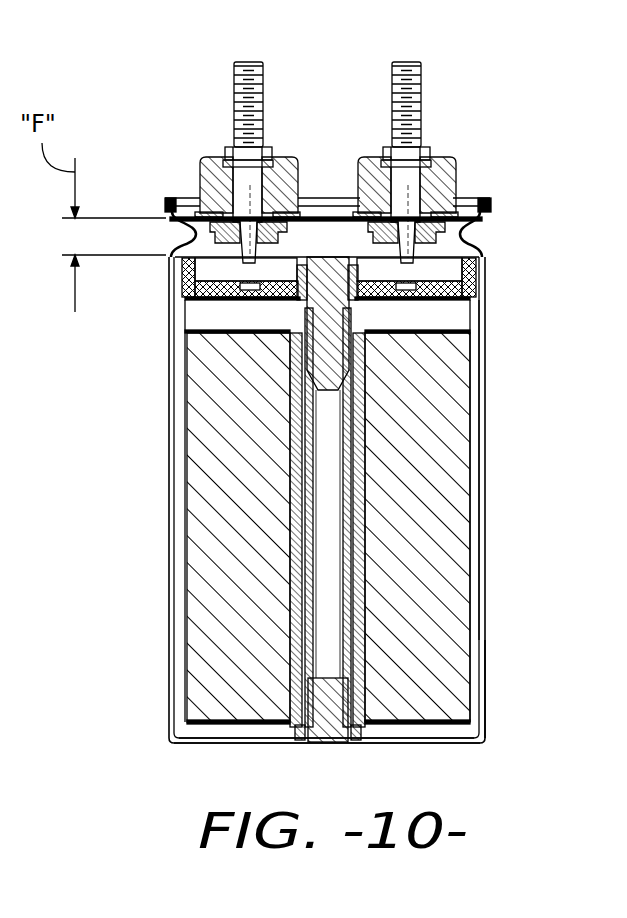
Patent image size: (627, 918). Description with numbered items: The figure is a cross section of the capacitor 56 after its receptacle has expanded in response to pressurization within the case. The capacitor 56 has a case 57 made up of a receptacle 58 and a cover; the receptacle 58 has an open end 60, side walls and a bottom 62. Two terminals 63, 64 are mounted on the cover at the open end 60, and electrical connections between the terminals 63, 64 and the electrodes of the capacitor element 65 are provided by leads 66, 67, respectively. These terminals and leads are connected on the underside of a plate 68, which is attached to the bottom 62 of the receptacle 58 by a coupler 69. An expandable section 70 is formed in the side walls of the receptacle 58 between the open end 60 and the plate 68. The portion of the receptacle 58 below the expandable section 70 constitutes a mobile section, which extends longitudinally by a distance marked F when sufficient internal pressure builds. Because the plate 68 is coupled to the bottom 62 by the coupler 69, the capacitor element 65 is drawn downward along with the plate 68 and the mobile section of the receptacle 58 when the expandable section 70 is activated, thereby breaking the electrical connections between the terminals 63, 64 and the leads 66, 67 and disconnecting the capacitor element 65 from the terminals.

The capacitor 56 is at (489, 544).
The case 57 is at (489, 601).
The receptacle 58 is at (487, 704).
The open end 60 is at (467, 207).
The bottom 62 is at (437, 745).
The terminal 63 is at (222, 148).
The terminal 64 is at (435, 148).
The capacitor element 65 is at (440, 430).
The lead 66 is at (187, 330).
The lead 67 is at (477, 310).
The plate 68 is at (170, 268).
The coupler 69 is at (328, 488).
The expandable section 70 is at (472, 238).